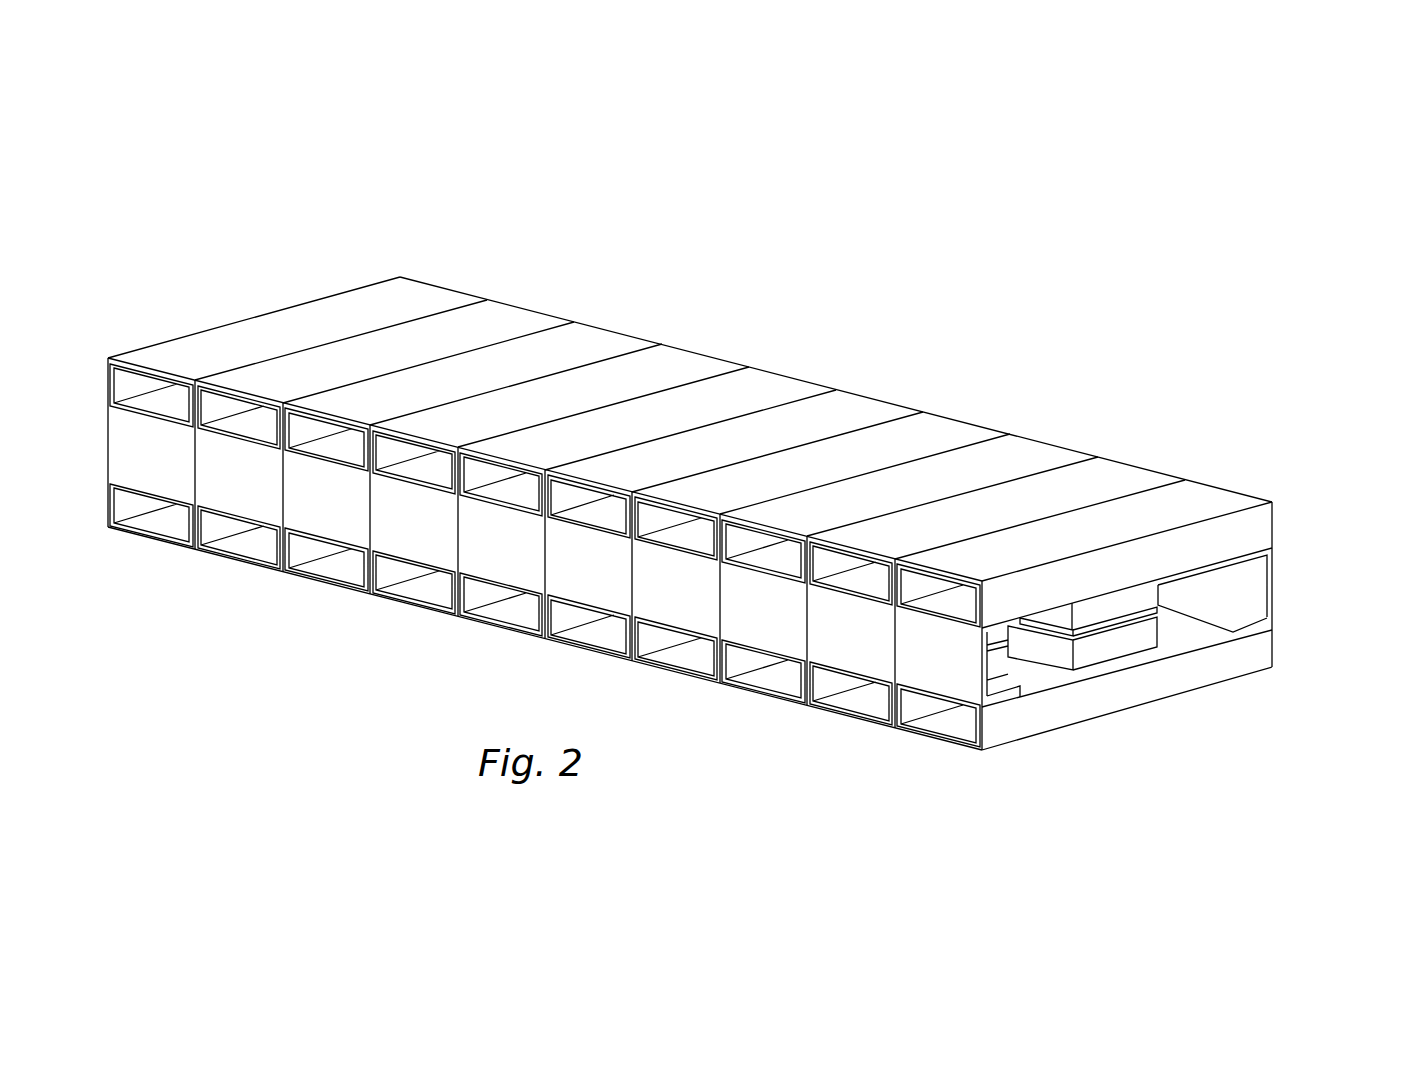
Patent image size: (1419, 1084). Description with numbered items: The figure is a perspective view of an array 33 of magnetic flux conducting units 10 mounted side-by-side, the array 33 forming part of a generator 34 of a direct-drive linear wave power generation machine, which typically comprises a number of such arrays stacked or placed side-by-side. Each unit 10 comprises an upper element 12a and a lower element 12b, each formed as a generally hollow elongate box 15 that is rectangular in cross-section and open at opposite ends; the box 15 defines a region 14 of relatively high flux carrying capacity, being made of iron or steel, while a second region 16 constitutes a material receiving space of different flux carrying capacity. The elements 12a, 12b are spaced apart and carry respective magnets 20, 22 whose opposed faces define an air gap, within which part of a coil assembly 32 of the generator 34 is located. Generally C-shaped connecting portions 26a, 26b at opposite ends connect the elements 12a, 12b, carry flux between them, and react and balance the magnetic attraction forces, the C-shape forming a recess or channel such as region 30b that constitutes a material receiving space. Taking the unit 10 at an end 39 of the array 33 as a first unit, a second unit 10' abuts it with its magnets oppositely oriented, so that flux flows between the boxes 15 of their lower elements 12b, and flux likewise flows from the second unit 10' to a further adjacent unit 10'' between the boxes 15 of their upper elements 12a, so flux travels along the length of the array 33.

The magnetic flux conducting unit 10 is at (1152, 484).
The second unit 10' is at (1061, 460).
The further adjacent unit 10'' is at (974, 437).
The upper element 12a is at (1218, 507).
The lower element 12b is at (1257, 649).
The region of relatively high magnetic flux carrying capacity 14 is at (952, 559).
The hollow elongate box 15 is at (1034, 462).
The region of different magnetic flux carrying capacity 16 is at (973, 613).
The magnet 20 is at (1113, 608).
The magnet 22 is at (1103, 653).
The connecting portion 26a is at (944, 676).
The connecting portion 26b is at (1301, 592).
The region of different magnetic flux carrying capacity 30b is at (1246, 596).
The coil assembly 32 is at (1143, 622).
The array 33 is at (726, 292).
The generator 34 is at (1025, 213).
The end of the array 39 is at (987, 772).